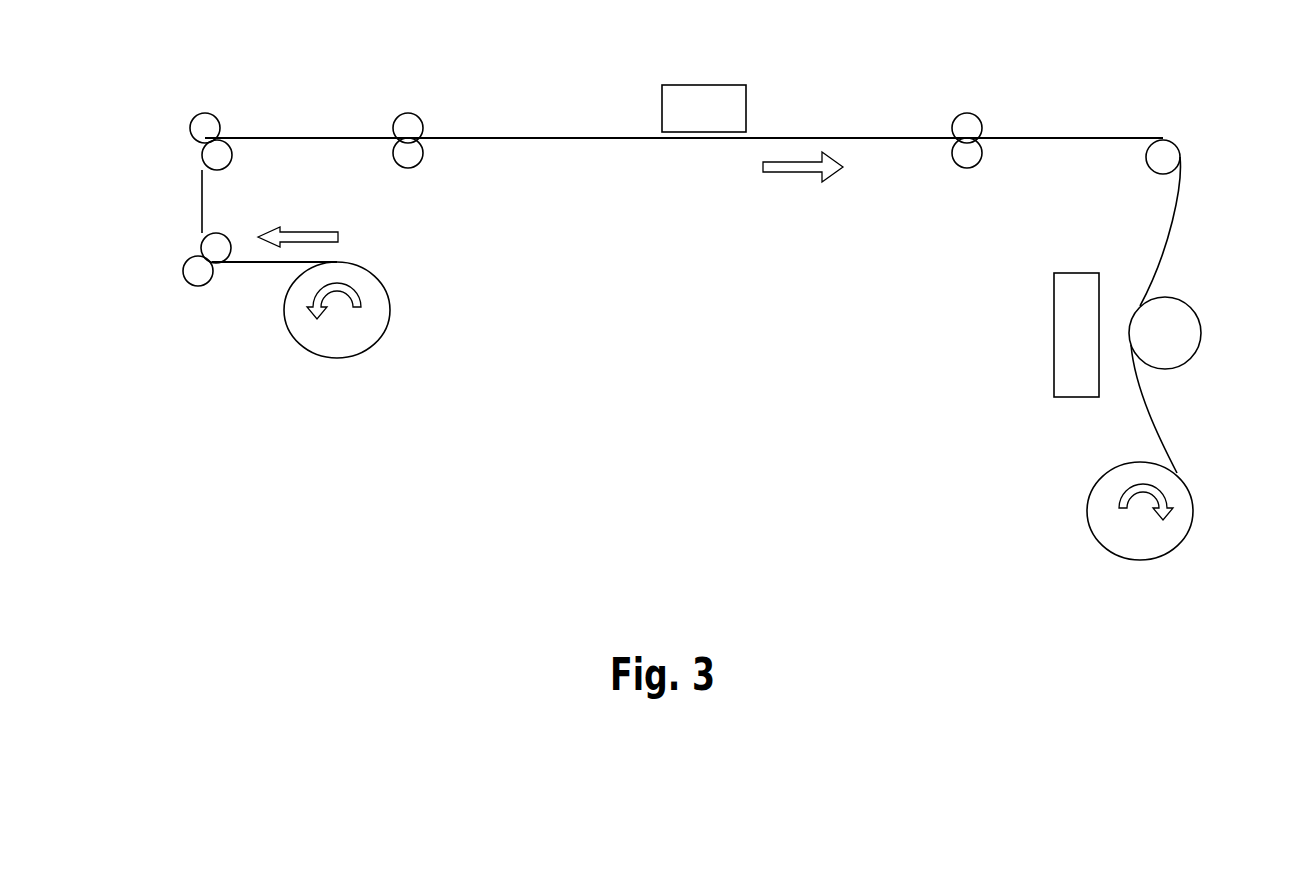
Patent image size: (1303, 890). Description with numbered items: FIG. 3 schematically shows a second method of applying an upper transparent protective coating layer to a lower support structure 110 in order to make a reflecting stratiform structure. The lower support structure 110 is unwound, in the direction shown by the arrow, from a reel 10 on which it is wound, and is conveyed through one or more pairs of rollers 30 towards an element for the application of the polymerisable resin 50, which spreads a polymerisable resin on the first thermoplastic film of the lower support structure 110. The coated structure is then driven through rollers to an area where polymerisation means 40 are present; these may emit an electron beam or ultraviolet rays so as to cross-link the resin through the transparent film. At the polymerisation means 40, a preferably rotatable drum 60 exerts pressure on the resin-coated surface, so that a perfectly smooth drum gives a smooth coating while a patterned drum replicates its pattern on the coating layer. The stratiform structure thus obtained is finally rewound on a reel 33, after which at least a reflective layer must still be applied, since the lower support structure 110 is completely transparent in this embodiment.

The reel 10 is at (390, 310).
The pairs of rollers 30 is at (202, 110).
The reel 33 is at (1087, 510).
The polymerisation means 40 is at (1040, 347).
The element for the application of the polymerisable resin 50 is at (700, 82).
The drum 60 is at (1188, 280).
The lower support structure 110 is at (272, 268).